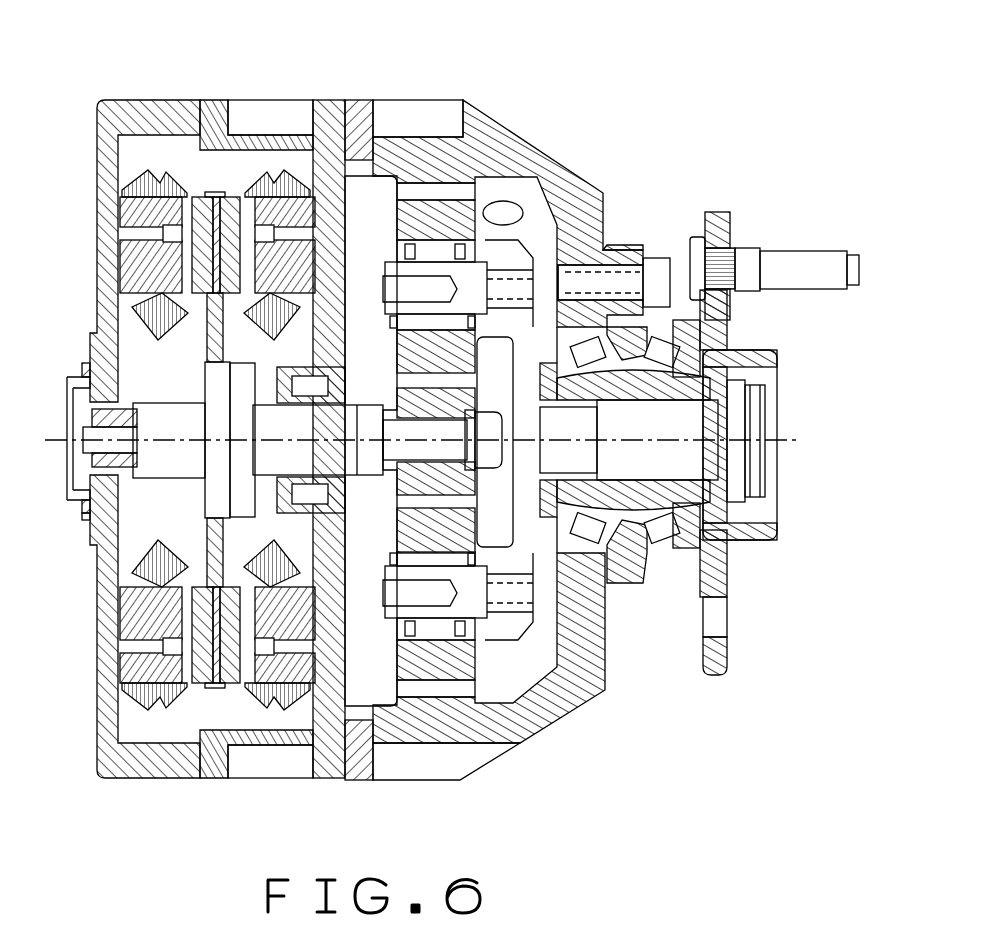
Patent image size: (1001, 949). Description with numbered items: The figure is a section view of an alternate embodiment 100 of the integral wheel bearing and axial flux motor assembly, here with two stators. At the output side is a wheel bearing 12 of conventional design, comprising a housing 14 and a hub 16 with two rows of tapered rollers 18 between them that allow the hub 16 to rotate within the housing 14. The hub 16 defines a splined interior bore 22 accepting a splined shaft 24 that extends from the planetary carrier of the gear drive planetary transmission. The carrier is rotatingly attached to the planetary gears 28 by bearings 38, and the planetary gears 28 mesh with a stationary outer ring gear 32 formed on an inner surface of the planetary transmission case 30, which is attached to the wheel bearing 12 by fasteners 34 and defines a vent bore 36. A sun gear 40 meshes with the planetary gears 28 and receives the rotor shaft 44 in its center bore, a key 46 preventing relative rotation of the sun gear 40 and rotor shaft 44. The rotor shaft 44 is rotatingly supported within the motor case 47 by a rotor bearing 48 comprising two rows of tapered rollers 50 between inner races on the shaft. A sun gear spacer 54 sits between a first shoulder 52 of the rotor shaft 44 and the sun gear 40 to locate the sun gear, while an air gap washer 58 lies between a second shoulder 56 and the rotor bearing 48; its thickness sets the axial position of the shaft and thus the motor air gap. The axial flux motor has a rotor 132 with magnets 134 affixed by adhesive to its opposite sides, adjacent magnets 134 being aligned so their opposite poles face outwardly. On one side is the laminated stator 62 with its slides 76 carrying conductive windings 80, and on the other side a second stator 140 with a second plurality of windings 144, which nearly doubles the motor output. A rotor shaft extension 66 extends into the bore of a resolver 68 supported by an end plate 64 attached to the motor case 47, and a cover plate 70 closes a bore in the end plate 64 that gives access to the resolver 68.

The wheel bearing 12 is at (613, 232).
The housing 14 is at (637, 585).
The hub 16 is at (730, 653).
The tapered rollers 18 is at (650, 323).
The splined interior bore 22 is at (717, 418).
The splined shaft 24 is at (693, 463).
The planetary gears 28 is at (385, 198).
The planetary transmission case 30 is at (477, 137).
The outer ring gear 32 is at (508, 215).
The fasteners 34 is at (671, 258).
The vent bore 36 is at (490, 187).
The bearings 38 is at (445, 250).
The sun gear 40 is at (373, 742).
The rotor shaft 44 is at (302, 468).
The key 46 is at (383, 443).
The motor case 47 is at (335, 100).
The rotor bearing 48 is at (88, 416).
The tapered rollers 50 is at (283, 524).
The first shoulder 52 is at (375, 456).
The sun gear spacer 54 is at (353, 345).
The second shoulder 56 is at (285, 415).
The air gap washer 58 is at (207, 305).
The stator 62 is at (232, 683).
The end plate 64 is at (100, 104).
The rotor shaft extension 66 is at (83, 445).
The resolver 68 is at (80, 392).
The cover plate 70 is at (857, 256).
The slides 76 is at (535, 248).
The windings 80 is at (308, 152).
The alternate embodiment 100 is at (582, 146).
The rotor 132 is at (222, 193).
The magnets 134 is at (188, 195).
The second stator 140 is at (140, 210).
The second plurality of windings 144 is at (130, 173).